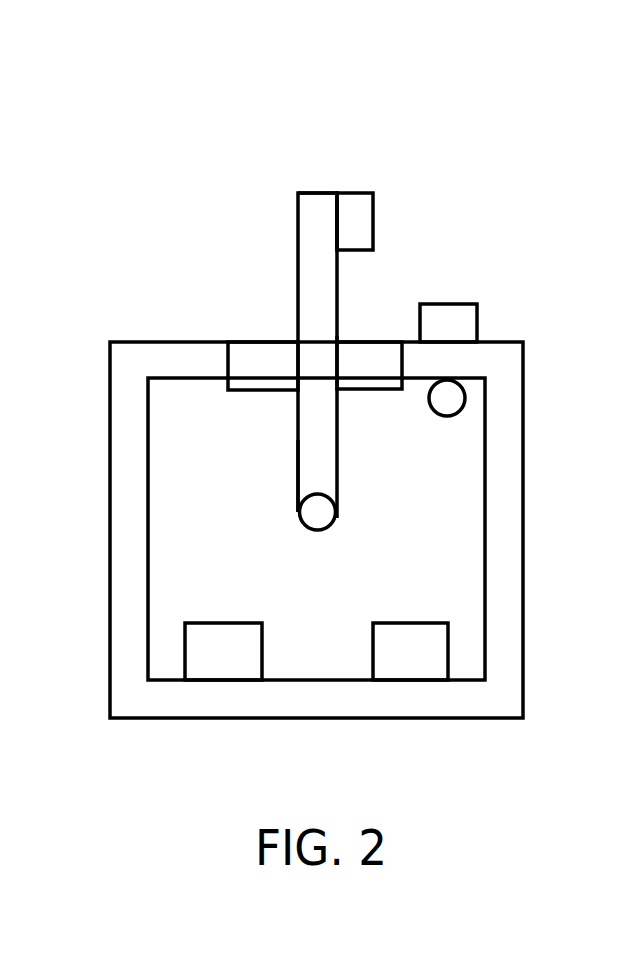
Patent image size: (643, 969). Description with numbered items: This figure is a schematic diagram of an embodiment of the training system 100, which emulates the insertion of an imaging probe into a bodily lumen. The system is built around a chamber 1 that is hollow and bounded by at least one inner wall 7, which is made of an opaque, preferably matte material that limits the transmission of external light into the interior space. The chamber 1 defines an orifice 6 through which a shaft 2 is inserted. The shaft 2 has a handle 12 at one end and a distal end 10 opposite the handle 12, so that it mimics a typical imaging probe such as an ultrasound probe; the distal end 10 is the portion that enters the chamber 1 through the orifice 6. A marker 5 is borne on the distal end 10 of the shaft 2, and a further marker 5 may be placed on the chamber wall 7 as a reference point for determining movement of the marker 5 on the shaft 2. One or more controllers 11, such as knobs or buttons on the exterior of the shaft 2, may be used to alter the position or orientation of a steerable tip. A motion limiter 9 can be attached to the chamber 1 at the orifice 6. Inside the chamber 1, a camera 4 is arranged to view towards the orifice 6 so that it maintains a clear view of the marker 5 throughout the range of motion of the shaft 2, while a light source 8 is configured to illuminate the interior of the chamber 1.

The training system 100 is at (110, 138).
The chamber 1 is at (503, 376).
The shaft 2 is at (300, 285).
The camera 4 is at (410, 652).
The marker 5 is at (447, 398).
The orifice 6 is at (340, 335).
The inner wall 7 is at (148, 580).
The light source 8 is at (224, 652).
The motion limiter 9 is at (255, 367).
The distal end 10 is at (302, 475).
The controller 11 is at (353, 222).
The handle 12 is at (323, 214).